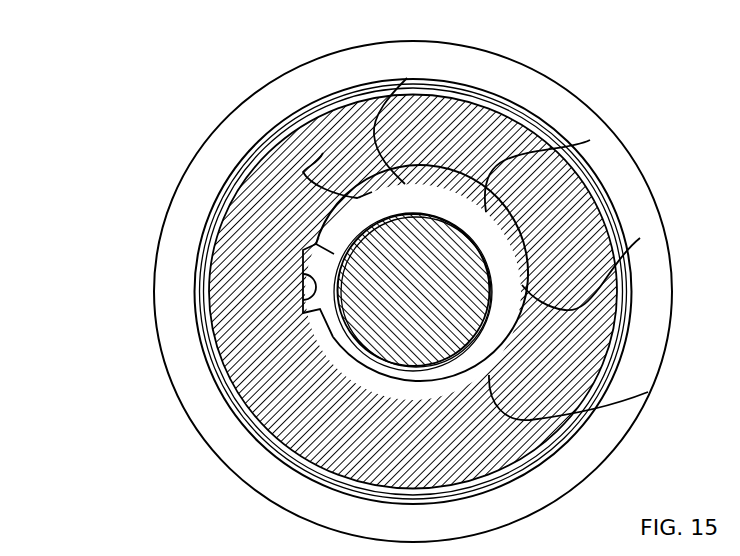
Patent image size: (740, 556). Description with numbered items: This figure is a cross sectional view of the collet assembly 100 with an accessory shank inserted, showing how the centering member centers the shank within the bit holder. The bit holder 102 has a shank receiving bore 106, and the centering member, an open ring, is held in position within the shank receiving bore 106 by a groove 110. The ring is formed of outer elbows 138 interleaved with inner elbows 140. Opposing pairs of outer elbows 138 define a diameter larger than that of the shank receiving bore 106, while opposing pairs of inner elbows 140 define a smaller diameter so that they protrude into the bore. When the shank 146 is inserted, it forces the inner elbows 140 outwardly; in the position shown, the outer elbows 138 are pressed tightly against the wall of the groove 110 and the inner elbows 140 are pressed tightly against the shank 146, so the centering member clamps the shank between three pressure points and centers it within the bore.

The collet assembly 100 is at (98, 182).
The bit holder 102 is at (431, 455).
The shank receiving bore 106 is at (323, 153).
The groove 110 is at (302, 289).
The outer elbows 138 is at (590, 140).
The inner elbows 140 is at (407, 78).
The shank 146 is at (446, 300).